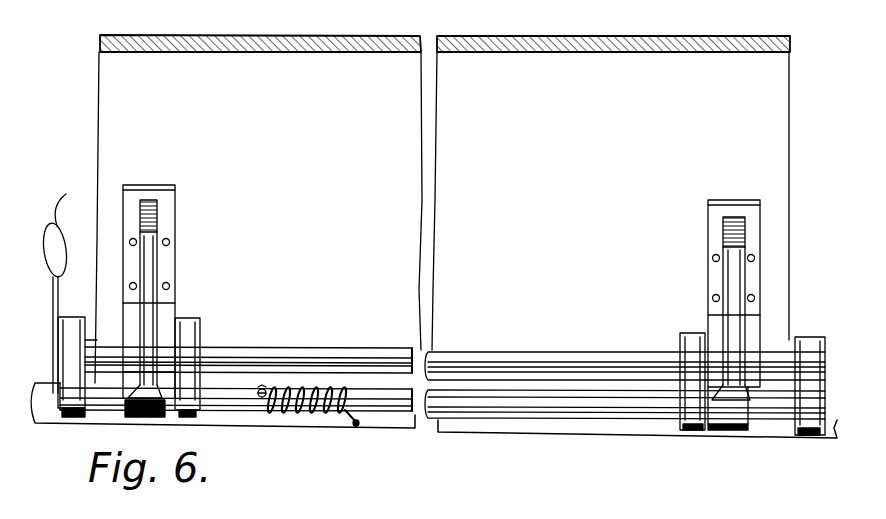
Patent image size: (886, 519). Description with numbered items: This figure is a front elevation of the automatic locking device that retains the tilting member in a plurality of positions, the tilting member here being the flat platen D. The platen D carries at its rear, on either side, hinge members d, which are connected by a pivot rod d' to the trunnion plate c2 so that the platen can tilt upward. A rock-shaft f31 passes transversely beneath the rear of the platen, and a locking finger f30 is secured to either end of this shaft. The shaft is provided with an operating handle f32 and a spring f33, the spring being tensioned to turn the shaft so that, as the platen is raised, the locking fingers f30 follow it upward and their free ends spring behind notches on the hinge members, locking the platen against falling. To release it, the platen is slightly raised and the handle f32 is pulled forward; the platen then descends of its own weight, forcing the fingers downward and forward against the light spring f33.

The flat platen D is at (442, 209).
The hinge members d is at (441, 307).
The pivot rod d' is at (455, 345).
The locking finger f30 is at (148, 274).
The rock-shaft f31 is at (494, 405).
The operating handle f32 is at (65, 270).
The spring f33 is at (322, 420).
The trunnion plate c2 is at (638, 425).